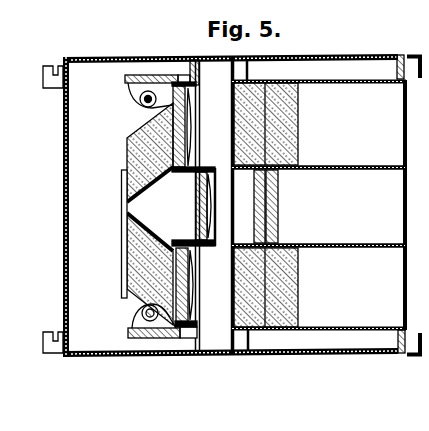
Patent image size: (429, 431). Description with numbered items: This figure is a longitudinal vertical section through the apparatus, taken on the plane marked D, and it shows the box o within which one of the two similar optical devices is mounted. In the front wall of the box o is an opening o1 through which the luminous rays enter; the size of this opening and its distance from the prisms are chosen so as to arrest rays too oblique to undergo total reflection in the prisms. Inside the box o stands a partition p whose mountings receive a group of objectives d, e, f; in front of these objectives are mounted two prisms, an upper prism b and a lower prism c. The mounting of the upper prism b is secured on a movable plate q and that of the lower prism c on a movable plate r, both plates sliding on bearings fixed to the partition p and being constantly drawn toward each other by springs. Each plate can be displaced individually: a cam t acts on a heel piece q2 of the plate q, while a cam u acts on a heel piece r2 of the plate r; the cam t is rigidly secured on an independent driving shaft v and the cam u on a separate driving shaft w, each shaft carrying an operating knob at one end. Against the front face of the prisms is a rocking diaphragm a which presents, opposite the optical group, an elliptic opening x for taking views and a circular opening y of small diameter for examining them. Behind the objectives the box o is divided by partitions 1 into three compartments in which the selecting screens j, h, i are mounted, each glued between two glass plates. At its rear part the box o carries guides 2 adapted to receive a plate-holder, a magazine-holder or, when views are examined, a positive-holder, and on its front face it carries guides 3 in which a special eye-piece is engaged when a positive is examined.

The box o is at (322, 55).
The opening o1 is at (63, 212).
The partition 1 is at (397, 68).
The guide 2 is at (412, 64).
The guide 3 is at (50, 66).
The section line D is at (178, 18).
The selecting screen j is at (265, 128).
The selecting screen h is at (272, 205).
The selecting screen i is at (265, 290).
The heel piece r2 is at (133, 75).
The partition p is at (195, 78).
The objective f is at (187, 137).
The movable plate r is at (188, 100).
The objective d is at (201, 207).
The objective e is at (192, 272).
The movable plate q is at (188, 311).
The upper prism b is at (150, 165).
The lower prism c is at (161, 173).
The diaphragm a is at (122, 241).
The circular opening y is at (122, 267).
The elliptic opening x is at (121, 207).
The driving shaft w is at (140, 102).
The cam u is at (135, 90).
The cam t is at (137, 321).
The driving shaft v is at (143, 311).
The heel piece q2 is at (128, 334).